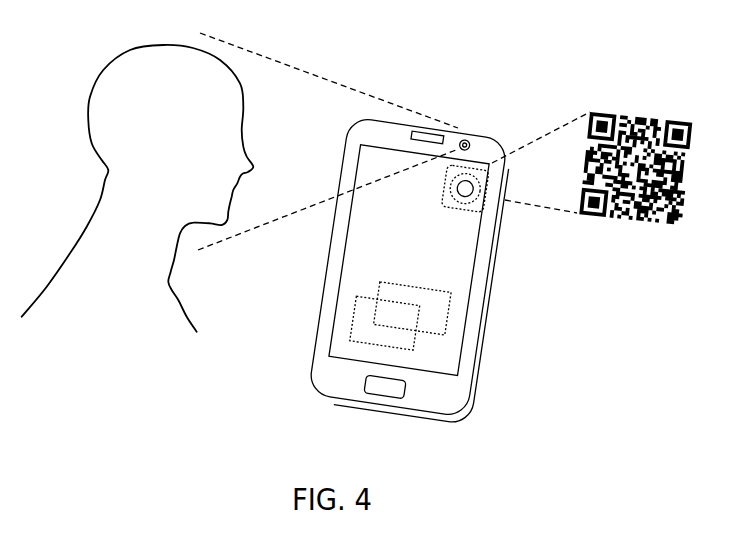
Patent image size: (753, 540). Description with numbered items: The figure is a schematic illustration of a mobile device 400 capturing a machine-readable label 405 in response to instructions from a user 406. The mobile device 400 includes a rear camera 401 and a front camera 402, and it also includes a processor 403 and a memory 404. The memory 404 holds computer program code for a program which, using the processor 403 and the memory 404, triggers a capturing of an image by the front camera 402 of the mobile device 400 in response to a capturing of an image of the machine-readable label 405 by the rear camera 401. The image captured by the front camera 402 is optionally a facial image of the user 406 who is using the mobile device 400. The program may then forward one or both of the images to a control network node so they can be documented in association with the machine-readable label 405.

The mobile device 400 is at (410, 271).
The rear camera 401 is at (471, 165).
The front camera 402 is at (462, 130).
The processor 403 is at (453, 294).
The memory 404 is at (423, 344).
The machine-readable label 405 is at (635, 191).
The user 406 is at (138, 188).